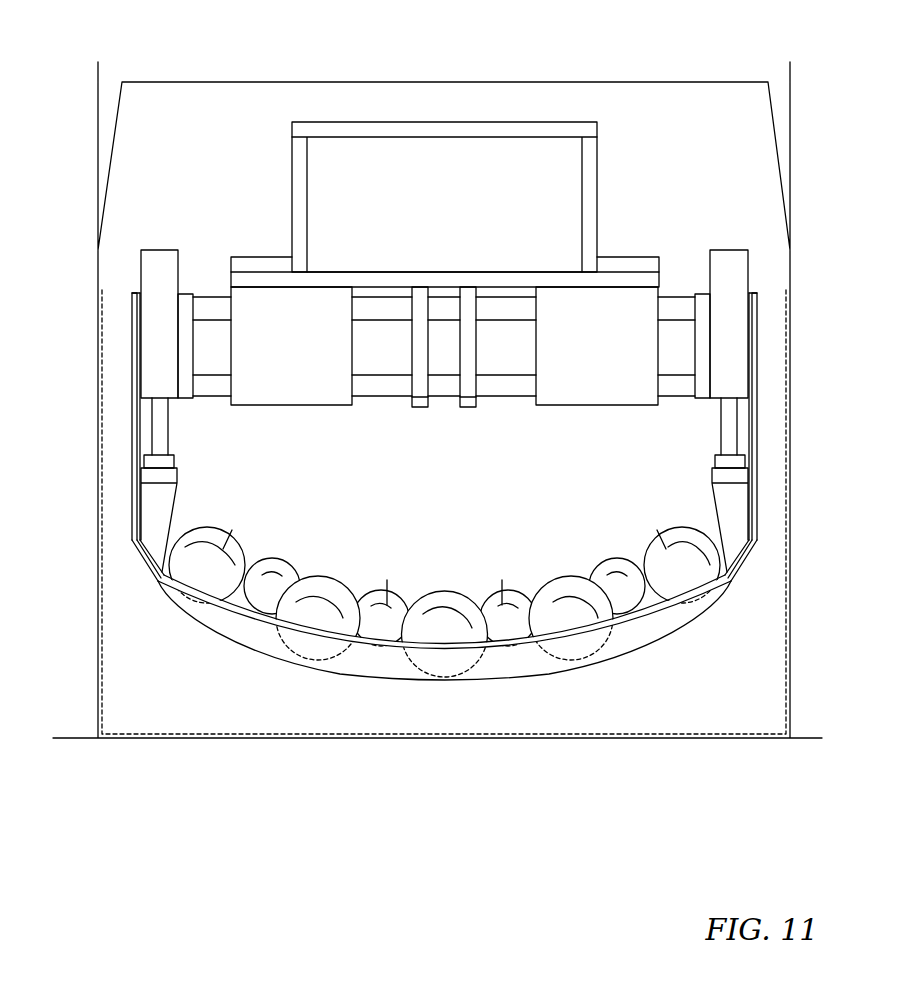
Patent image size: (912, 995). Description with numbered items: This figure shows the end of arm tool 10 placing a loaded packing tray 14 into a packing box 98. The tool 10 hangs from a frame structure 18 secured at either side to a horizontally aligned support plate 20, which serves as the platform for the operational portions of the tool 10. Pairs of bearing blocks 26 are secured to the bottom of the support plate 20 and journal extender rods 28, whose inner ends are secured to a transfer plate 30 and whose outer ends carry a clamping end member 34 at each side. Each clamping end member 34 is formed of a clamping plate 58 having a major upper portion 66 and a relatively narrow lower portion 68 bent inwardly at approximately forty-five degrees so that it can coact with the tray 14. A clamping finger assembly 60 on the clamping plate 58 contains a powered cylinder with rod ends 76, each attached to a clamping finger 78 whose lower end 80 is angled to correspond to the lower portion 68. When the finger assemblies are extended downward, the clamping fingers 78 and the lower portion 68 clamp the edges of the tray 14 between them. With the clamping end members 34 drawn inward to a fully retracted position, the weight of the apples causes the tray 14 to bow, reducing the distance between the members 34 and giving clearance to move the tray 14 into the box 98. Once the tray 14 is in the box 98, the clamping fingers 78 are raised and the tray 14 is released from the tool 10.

The end of arm tool 10 is at (373, 72).
The packing tray 14 is at (213, 637).
The frame structure 18 is at (597, 182).
The support plate 20 is at (445, 272).
The bearing block 26 is at (312, 405).
The extender rod 28 is at (215, 322).
The transfer plate 30 is at (459, 370).
The clamping end member 34 is at (130, 317).
The clamping plate 58 is at (130, 458).
The clamping finger assembly 60 is at (161, 250).
The major upper portion 66 is at (130, 362).
The lower portion 68 is at (140, 558).
The rod end 76 is at (167, 425).
The clamping finger 78 is at (165, 495).
The lower end 80 is at (172, 523).
The packing box 98 is at (97, 623).